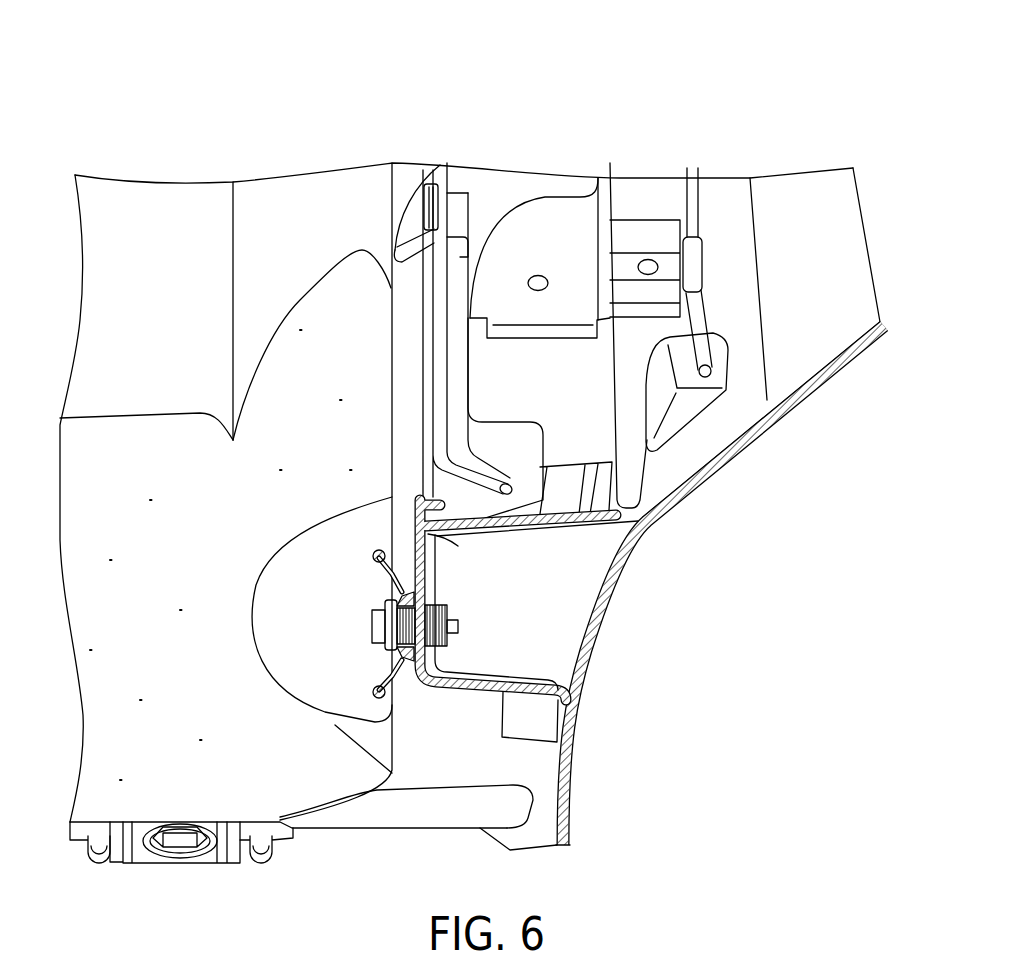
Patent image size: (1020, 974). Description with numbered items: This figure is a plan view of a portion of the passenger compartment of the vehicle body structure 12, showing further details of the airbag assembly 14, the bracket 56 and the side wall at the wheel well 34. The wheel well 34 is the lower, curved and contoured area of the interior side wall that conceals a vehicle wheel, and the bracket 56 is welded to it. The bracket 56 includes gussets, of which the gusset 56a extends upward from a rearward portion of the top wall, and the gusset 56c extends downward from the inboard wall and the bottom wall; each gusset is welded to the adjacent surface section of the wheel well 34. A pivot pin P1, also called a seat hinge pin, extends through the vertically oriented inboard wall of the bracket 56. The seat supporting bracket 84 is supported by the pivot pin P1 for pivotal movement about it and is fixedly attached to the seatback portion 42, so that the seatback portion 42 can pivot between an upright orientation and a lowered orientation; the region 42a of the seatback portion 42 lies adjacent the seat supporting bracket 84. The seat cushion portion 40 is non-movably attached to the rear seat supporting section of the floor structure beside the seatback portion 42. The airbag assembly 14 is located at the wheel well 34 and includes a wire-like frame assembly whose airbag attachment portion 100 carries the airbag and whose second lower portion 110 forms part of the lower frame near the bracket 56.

The vehicle body structure 12 is at (588, 58).
The airbag assembly 14 is at (710, 208).
The wheel well 34 is at (735, 450).
The seat cushion portion 40 is at (132, 718).
The seatback portion 42 is at (304, 207).
The panel recess 42a is at (322, 683).
The bracket 56 is at (448, 700).
The gusset 56a is at (568, 490).
The gusset 56c is at (535, 713).
The seat supporting bracket 84 is at (386, 578).
The airbag attachment portion 100 is at (556, 232).
The second lower portion 110 is at (442, 536).
The pivot pin P1 is at (392, 626).